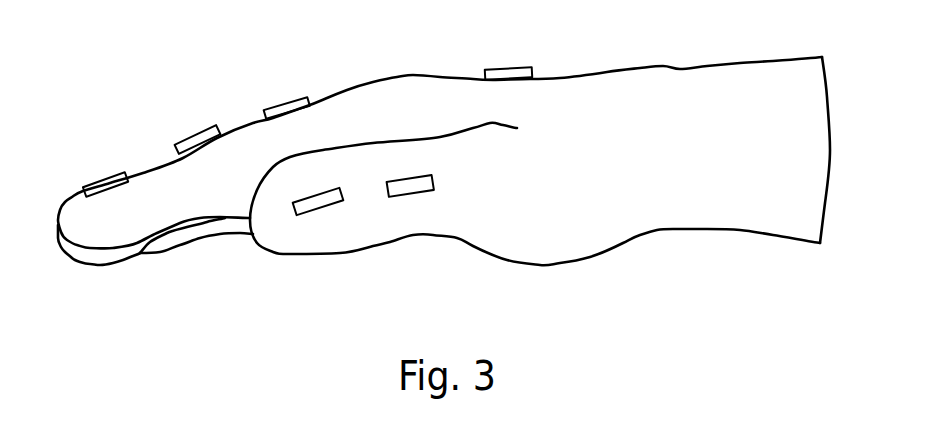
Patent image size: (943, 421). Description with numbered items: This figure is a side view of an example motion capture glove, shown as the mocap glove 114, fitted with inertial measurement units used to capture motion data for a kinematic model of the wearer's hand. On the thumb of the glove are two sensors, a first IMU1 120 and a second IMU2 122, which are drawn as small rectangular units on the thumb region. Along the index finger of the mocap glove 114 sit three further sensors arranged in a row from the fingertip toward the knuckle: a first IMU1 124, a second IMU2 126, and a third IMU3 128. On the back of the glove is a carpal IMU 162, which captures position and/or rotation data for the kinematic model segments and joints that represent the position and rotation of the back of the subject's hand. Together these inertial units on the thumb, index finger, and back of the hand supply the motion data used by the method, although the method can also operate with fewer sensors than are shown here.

The mocap glove 114 is at (242, 50).
The first IMU1 120 is at (315, 213).
The second IMU2 122 is at (422, 197).
The first IMU1 124 is at (112, 173).
The second IMU2 126 is at (198, 128).
The third IMU3 128 is at (302, 98).
The carpal IMU 162 is at (513, 68).